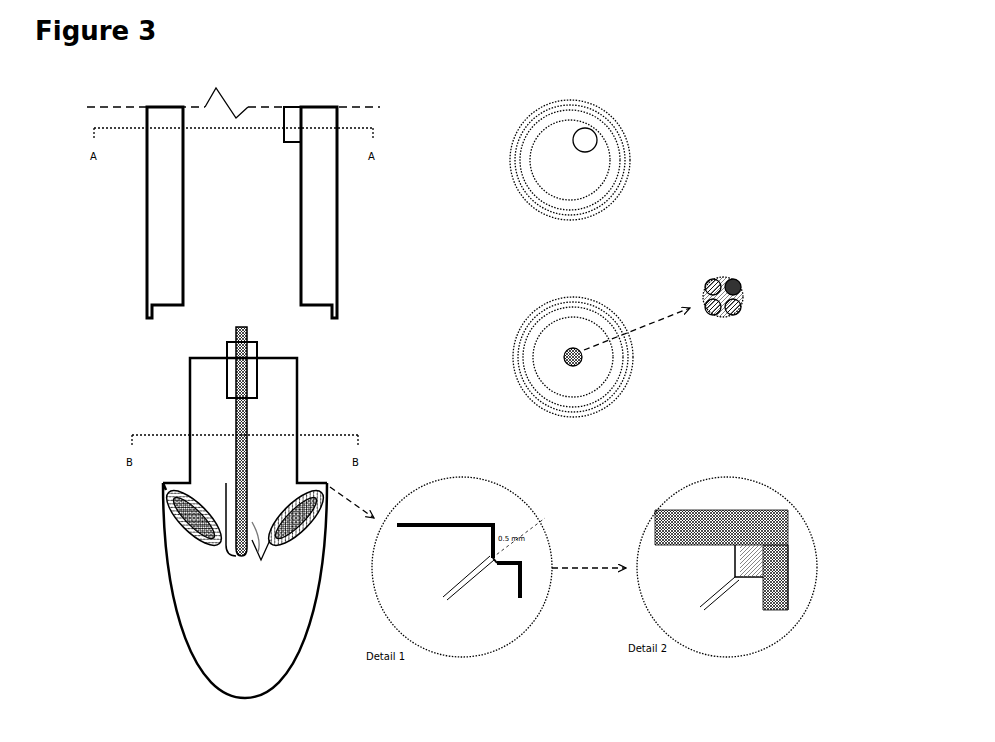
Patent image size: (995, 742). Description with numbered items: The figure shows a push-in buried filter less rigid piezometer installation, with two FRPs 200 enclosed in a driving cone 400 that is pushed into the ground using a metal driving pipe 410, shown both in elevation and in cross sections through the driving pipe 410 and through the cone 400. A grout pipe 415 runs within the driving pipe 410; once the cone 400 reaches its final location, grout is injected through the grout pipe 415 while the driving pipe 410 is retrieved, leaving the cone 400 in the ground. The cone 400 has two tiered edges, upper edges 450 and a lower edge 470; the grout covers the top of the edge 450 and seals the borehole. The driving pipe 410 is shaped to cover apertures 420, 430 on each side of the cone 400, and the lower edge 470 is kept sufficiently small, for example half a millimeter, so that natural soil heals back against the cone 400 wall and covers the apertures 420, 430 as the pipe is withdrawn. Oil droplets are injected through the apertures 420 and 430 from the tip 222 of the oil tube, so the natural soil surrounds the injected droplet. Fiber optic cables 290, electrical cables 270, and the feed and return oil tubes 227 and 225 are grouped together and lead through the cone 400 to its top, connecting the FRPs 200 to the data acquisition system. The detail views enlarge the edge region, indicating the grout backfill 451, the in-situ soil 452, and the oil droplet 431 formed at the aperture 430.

The driving pipe 410 is at (508, 157).
The grout pipe 415 is at (287, 146).
The driving cone 400 is at (186, 648).
The upper edges 450 is at (176, 480).
The aperture 420 is at (163, 487).
The FRP 200 is at (185, 535).
The electric cable 270 is at (712, 283).
The fiber optic cable 290 is at (738, 289).
The return tube 225 is at (711, 313).
The feeding tube 227 is at (740, 310).
The aperture 430 is at (512, 547).
The lower edge 470 is at (507, 560).
The tip of oil tube 222 is at (490, 577).
The grout backfill 451 is at (704, 520).
The in-situ soil 452 is at (794, 567).
The oil droplet 431 is at (755, 586).